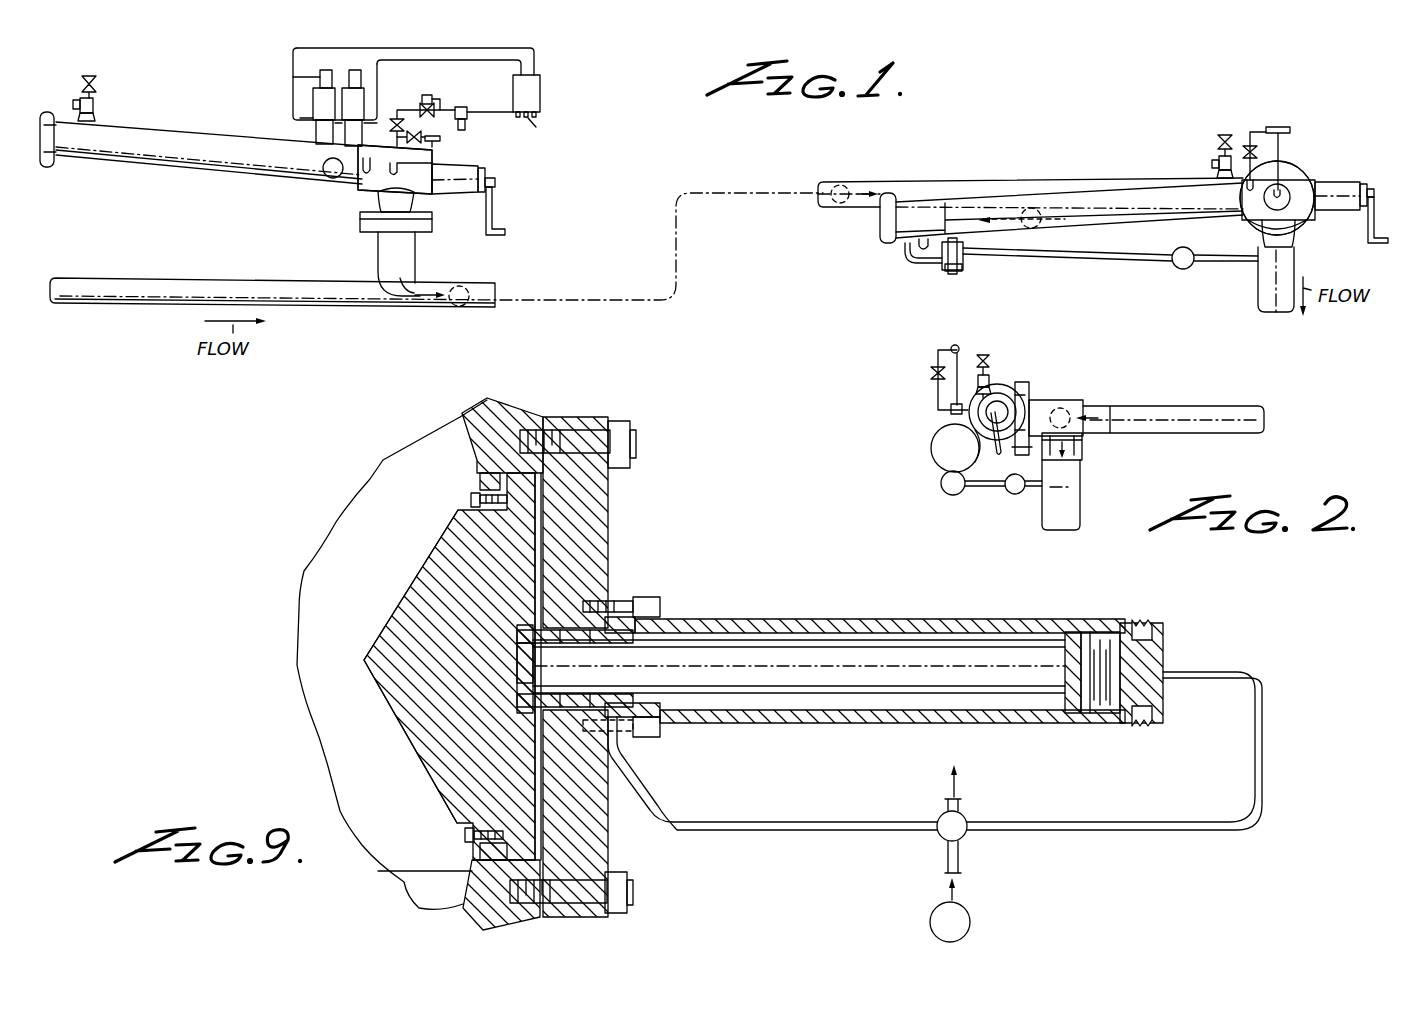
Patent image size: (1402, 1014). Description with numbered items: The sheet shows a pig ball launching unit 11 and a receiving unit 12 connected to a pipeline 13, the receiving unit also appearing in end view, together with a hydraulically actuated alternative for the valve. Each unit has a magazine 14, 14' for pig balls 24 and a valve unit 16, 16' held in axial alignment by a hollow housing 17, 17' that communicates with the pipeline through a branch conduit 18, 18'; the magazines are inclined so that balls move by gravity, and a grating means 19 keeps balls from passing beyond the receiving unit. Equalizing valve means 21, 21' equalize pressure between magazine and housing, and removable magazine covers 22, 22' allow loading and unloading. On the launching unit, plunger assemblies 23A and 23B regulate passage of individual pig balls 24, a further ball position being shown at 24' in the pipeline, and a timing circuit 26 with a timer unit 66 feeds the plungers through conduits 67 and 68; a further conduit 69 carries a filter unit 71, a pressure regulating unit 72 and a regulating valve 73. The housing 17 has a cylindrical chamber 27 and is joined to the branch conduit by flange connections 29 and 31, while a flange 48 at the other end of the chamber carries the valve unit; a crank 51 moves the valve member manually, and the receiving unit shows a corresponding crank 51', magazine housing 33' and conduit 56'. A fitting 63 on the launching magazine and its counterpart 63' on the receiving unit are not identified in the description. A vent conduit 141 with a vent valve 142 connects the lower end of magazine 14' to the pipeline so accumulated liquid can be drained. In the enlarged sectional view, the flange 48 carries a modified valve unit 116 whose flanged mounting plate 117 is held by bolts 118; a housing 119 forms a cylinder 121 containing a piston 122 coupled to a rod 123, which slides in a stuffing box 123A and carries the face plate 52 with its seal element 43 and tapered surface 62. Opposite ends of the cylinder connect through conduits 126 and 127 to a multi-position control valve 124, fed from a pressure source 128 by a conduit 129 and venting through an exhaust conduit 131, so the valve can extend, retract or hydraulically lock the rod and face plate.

In FIG. 1, the launching unit 11 is at (514, 176).
In FIG. 1, the receiving unit 12 is at (1310, 152).
In FIG. 1, the pipeline 13 is at (183, 278).
In FIG. 2, the pipeline 13 is at (1220, 406).
In FIG. 1, the magazine 14 is at (203, 141).
In FIG. 1, the magazine 14' is at (1069, 187).
In FIG. 1, the valve unit 16 is at (458, 197).
In FIG. 1, the valve unit 16' is at (1341, 174).
In FIG. 2, the valve unit 16' is at (1006, 389).
In FIG. 1, the hollow housing 17 is at (371, 182).
In FIG. 9, the hollow housing 17 is at (465, 897).
In FIG. 1, the hollow housing 17' is at (1257, 204).
In FIG. 2, the hollow housing 17' is at (1049, 394).
In FIG. 1, the branch conduit 18 is at (371, 264).
In FIG. 2, the branch conduit 18' is at (1060, 401).
In FIG. 2, the means for directing pig balls 19 is at (1082, 450).
In FIG. 1, the equalizing valve means 21 is at (436, 147).
In FIG. 1, the equalizing valve means 21' is at (1259, 134).
In FIG. 2, the equalizing valve means 21' is at (915, 380).
In FIG. 1, the removable magazine cover 22 is at (52, 160).
In FIG. 1, the removable magazine cover 22' is at (855, 231).
In FIG. 1, the plunger assembly 23A is at (355, 70).
In FIG. 1, the plunger assembly 23B is at (293, 77).
In FIG. 1, the pig ball 24 is at (686, 198).
In FIG. 2, the pig ball 24 is at (1087, 400).
In FIG. 1, the plug 24' is at (442, 316).
In FIG. 1, the timing circuit 26 is at (540, 45).
In FIG. 9, the cylindrical chamber 27 is at (373, 502).
In FIG. 1, the flange connection 29 is at (358, 222).
In FIG. 1, the flange connection 31 is at (427, 232).
In FIG. 2, the pump 33' is at (922, 459).
In FIG. 9, the seal element 43 is at (473, 850).
In FIG. 9, the flange 48 is at (513, 417).
In FIG. 1, the crank 51 is at (518, 206).
In FIG. 2, the crank 51 is at (990, 445).
In FIG. 1, the crank handle 51' is at (1355, 221).
In FIG. 9, the face plate 52 is at (433, 557).
In FIG. 2, the pipe 56' is at (917, 381).
In FIG. 9, the tapered surface 62 is at (420, 768).
In FIG. 1, the vent valve 63 is at (109, 98).
In FIG. 1, the vent valve 63' is at (1222, 156).
In FIG. 2, the vent valve 63' is at (998, 358).
In FIG. 1, the timer unit 66 is at (541, 96).
In FIG. 1, the conduit 67 is at (490, 60).
In FIG. 1, the conduit 68 is at (297, 50).
In FIG. 1, the conduit 69 is at (536, 127).
In FIG. 1, the filter unit 71 is at (468, 125).
In FIG. 1, the pressure regulating unit 72 is at (427, 95).
In FIG. 1, the regulating valve 73 is at (391, 118).
In FIG. 9, the modified valve unit 116 is at (538, 583).
In FIG. 9, the flanged mounting plate 117 is at (585, 513).
In FIG. 9, the bolts 118 is at (622, 428).
In FIG. 9, the housing 119 is at (717, 619).
In FIG. 9, the elongated cylinder 121 is at (850, 640).
In FIG. 9, the reciprocable piston 122 is at (1062, 632).
In FIG. 9, the rod 123 is at (940, 677).
In FIG. 9, the stuffing box 123A is at (588, 645).
In FIG. 9, the multi-position control valve 124 is at (966, 818).
In FIG. 9, the conduit 126 is at (645, 790).
In FIG. 9, the conduit 127 is at (1262, 760).
In FIG. 9, the source of fluid under pressure 128 is at (960, 923).
In FIG. 9, the conduit 129 is at (945, 865).
In FIG. 9, the exhaust conduit 131 is at (945, 808).
In FIG. 1, the vent conduit 141 is at (1120, 263).
In FIG. 2, the vent conduit 141 is at (982, 490).
In FIG. 1, the vent valve 142 is at (1189, 270).
In FIG. 2, the vent valve 142 is at (1012, 494).